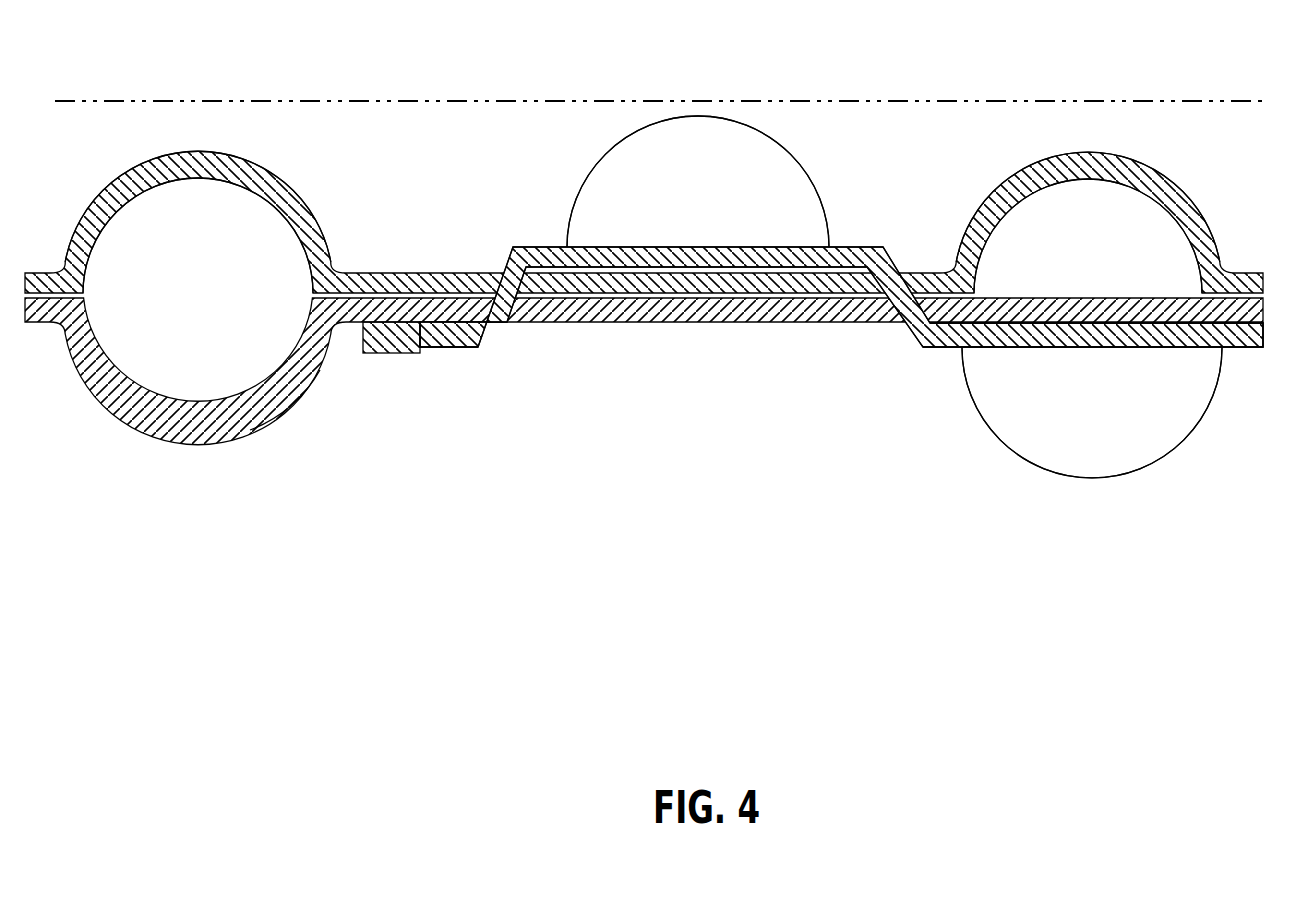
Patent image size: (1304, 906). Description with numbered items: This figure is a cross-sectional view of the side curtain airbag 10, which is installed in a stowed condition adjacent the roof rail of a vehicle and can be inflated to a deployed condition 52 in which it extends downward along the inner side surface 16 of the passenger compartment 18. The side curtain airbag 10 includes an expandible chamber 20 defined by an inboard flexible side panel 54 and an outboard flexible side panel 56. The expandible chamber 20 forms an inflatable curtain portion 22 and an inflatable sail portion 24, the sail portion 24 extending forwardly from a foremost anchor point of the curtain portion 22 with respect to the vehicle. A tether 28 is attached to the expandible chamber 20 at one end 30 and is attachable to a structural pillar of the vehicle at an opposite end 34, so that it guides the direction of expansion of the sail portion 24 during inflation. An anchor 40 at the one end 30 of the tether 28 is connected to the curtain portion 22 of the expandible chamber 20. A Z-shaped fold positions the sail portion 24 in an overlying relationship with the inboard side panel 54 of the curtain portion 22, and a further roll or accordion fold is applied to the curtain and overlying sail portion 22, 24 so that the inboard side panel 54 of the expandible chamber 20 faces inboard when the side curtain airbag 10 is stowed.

The side curtain airbag 10 is at (236, 52).
The inner side surface 16 is at (470, 109).
The passenger compartment 18 is at (484, 158).
The expandible chamber 20 is at (174, 402).
The inflatable curtain portion 22 is at (228, 393).
The inflatable sail portion 24 is at (797, 150).
The tether 28 is at (688, 243).
The one end 30 is at (455, 350).
The opposite end 34 is at (1256, 362).
The anchor 40 is at (380, 357).
The deployed condition 52 is at (985, 505).
The inboard flexible side panel 54 is at (290, 400).
The outboard flexible side panel 56 is at (290, 180).